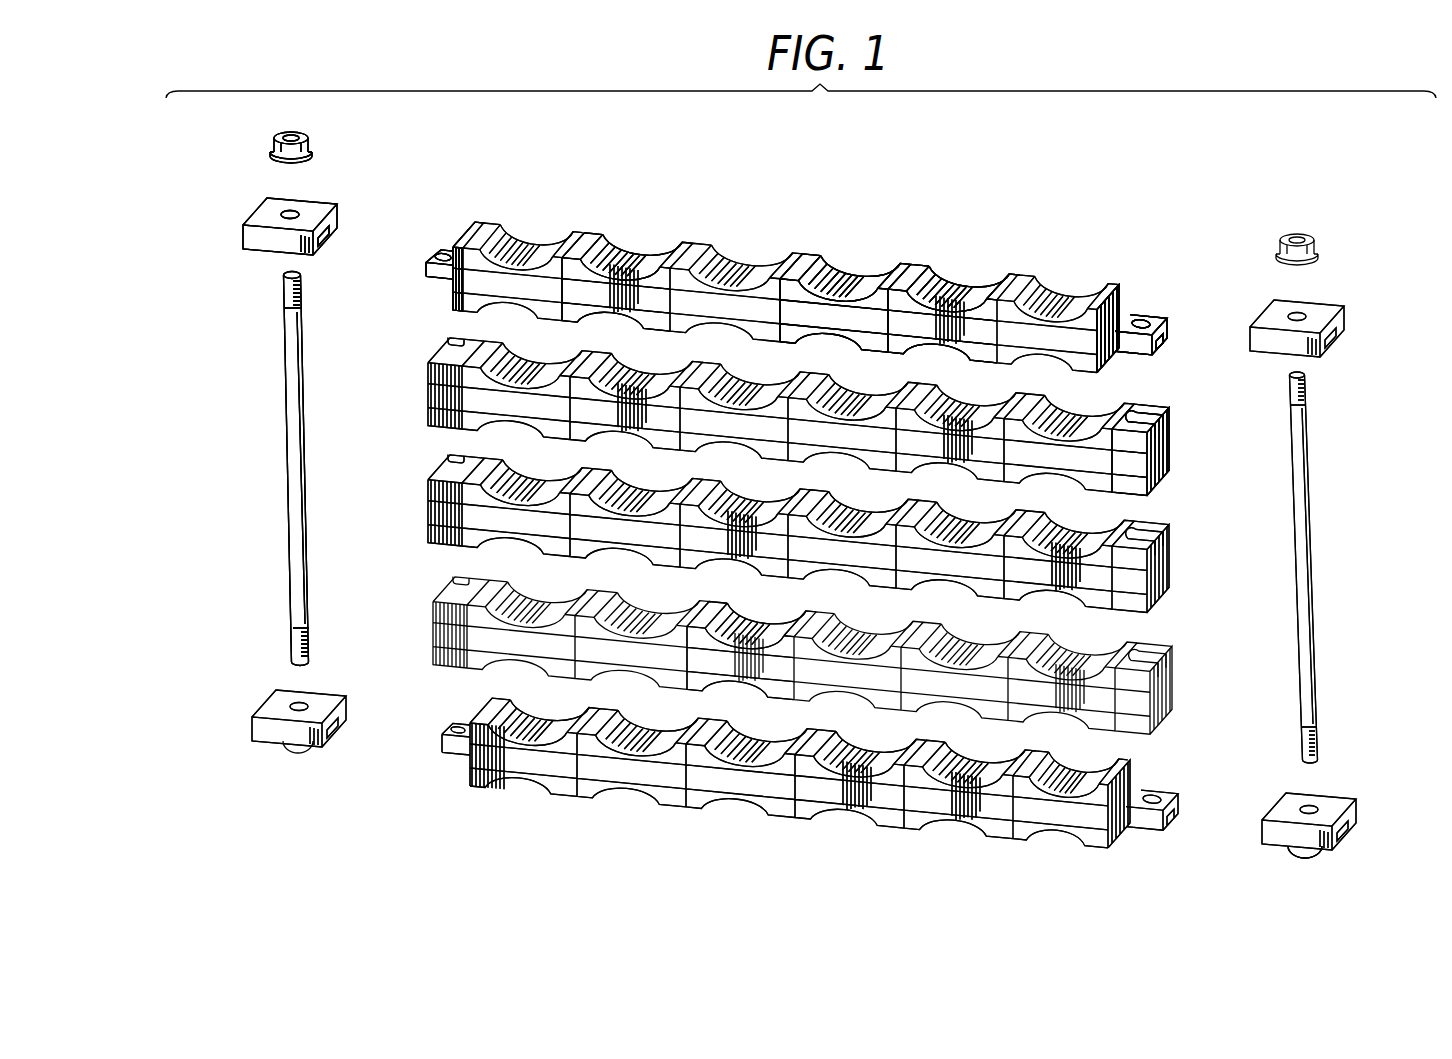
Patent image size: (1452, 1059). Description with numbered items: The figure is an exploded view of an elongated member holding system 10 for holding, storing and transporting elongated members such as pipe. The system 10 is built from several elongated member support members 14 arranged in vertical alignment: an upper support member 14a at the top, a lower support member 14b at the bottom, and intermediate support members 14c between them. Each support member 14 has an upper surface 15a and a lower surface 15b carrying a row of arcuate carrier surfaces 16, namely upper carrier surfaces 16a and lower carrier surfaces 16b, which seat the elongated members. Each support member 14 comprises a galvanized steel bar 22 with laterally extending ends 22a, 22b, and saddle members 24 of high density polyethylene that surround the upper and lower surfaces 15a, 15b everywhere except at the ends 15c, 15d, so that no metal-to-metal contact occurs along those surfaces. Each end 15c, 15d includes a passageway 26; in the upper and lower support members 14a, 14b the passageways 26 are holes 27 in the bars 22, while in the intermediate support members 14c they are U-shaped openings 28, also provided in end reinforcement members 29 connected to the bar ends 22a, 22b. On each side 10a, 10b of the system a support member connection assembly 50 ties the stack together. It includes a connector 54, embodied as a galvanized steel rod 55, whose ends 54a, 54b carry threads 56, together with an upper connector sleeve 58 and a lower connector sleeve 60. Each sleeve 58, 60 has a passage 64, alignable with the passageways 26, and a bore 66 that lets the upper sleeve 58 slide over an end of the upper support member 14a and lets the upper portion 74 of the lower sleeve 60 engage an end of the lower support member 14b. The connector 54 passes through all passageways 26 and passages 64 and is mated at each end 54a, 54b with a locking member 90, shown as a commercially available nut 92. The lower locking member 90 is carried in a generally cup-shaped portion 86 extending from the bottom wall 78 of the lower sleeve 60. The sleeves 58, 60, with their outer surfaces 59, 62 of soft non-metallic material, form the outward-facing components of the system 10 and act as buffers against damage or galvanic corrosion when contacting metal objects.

The elongated member holding system 10 is at (921, 180).
The side of holding system 10a is at (243, 404).
The side of holding system 10b is at (1365, 504).
The elongated member support member 14 is at (522, 232).
The upper support member 14a is at (478, 214).
The lower support member 14b is at (1000, 854).
The intermediate support member 14c is at (405, 392).
The upper surface 15a is at (956, 262).
The lower surface 15b is at (947, 358).
The end of support member 15c is at (405, 268).
The end of support member 15d is at (1147, 279).
The elongated member carrier surface 16 is at (822, 276).
The upper carrier surface 16a is at (624, 249).
The lower carrier surface 16b is at (842, 348).
The bar 22 is at (1168, 328).
The end of bar 22a is at (430, 259).
The end of bar 22b is at (1142, 346).
The saddle member 24 is at (582, 226).
The passageway 26 is at (445, 349).
The hole 27 is at (448, 248).
The U-shaped opening 28 is at (450, 356).
The end reinforcement member 29 is at (1150, 406).
The support member connection assembly 50 is at (372, 151).
The connector 54 is at (280, 367).
The upper end of connector 54a is at (278, 294).
The lower end of connector 54b is at (284, 629).
The galvanized steel rod 55 is at (286, 481).
The threads 56 is at (1308, 406).
The upper connector sleeve 58 is at (242, 216).
The sleeve outer surface 59 is at (256, 208).
The lower connector sleeve 60 is at (268, 693).
The sleeve outer surface 62 is at (262, 746).
The passage 64 is at (297, 212).
The bore 66 is at (340, 223).
The upper portion of lower sleeve 74 is at (1286, 846).
The bottom wall 78 is at (1332, 853).
The generally cup-shaped portion 86 is at (1310, 859).
The locking member 90 is at (276, 137).
The nut 92 is at (305, 137).